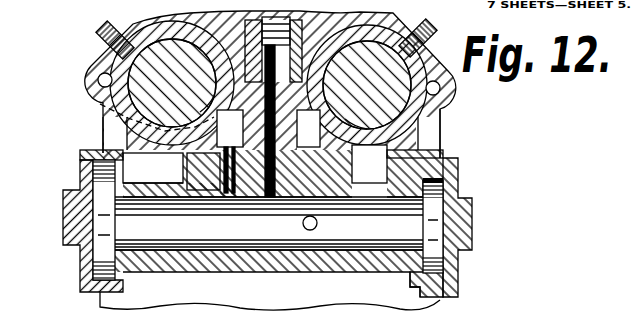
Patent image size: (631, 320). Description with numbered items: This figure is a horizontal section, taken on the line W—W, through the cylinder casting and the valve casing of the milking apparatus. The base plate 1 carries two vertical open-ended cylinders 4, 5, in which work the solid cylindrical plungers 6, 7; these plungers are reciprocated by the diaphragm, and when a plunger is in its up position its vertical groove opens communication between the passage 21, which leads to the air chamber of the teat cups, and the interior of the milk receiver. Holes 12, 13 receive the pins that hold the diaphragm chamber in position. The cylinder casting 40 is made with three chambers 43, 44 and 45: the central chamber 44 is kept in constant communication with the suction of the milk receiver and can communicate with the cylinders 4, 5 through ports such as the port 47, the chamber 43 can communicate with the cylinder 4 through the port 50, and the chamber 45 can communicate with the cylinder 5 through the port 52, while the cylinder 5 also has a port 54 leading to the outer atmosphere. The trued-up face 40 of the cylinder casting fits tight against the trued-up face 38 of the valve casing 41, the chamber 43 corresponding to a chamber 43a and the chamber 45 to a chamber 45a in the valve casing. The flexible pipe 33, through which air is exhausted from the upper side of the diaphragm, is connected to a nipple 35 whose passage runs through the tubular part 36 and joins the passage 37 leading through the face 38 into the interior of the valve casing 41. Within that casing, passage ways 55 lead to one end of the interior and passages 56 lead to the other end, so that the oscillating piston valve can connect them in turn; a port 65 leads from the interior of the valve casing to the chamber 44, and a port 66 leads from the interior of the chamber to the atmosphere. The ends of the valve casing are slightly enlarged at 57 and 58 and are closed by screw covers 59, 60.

The base plate 1 is at (318, 46).
The cylinder 4 is at (172, 81).
The cylinder 5 is at (405, 30).
The plunger 6 is at (172, 83).
The plunger 7 is at (367, 85).
The hole 12 is at (101, 77).
The hole 13 is at (440, 88).
The passage 21 is at (128, 28).
The flexible pipe 33 is at (260, 51).
The nipple 35 is at (285, 50).
The tubular part 36 is at (294, 173).
The passage 37 is at (266, 228).
The valve casing face 38 is at (88, 156).
The cylinder casting face 40 is at (304, 145).
The valve casing 41 is at (269, 223).
The chamber 43 is at (125, 156).
The chamber 43a is at (153, 168).
The central chamber 44 is at (230, 151).
The chamber 45 is at (432, 150).
The chamber 45a is at (369, 164).
The port 47 is at (205, 108).
The port 50 is at (100, 104).
The port 52 is at (362, 126).
The port 54 is at (400, 130).
The passage ways 55 is at (137, 184).
The passages 56 is at (407, 184).
The enlarged end 57 is at (102, 251).
The enlarged end 58 is at (446, 263).
The screw cover 59 is at (75, 200).
The screw cover 60 is at (455, 178).
The port 65 is at (209, 173).
The port 66 is at (303, 224).